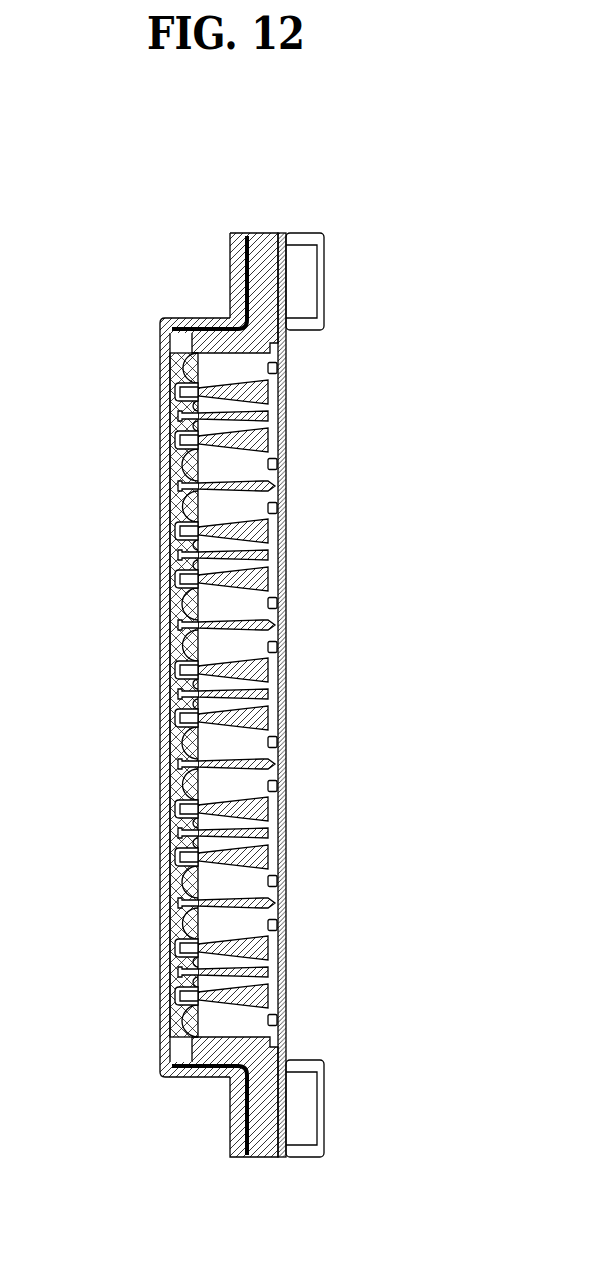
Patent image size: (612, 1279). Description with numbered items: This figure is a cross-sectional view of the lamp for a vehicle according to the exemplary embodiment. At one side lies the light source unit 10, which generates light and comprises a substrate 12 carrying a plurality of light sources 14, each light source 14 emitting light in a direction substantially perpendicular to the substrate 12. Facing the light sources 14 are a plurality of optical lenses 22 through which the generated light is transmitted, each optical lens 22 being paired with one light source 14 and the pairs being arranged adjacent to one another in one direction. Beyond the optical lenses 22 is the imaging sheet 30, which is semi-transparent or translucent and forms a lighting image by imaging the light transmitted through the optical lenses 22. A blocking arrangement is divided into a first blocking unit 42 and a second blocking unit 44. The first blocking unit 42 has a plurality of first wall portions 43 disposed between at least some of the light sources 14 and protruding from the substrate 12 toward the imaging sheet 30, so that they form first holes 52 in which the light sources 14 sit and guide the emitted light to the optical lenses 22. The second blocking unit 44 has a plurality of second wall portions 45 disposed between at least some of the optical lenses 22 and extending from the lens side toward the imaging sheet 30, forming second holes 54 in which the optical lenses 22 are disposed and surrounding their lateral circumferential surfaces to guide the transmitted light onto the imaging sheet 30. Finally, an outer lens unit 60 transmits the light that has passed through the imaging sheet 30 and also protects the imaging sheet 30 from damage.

The light source unit 10 is at (327, 695).
The substrate 12 is at (288, 445).
The light source 14 is at (288, 372).
The optical lens 22 is at (170, 747).
The imaging sheet 30 is at (191, 695).
The first blocking unit 42 is at (265, 233).
The first wall portion 43 is at (262, 722).
The second blocking unit 44 is at (197, 317).
The second wall portion 45 is at (168, 628).
The first hole 52 is at (225, 547).
The second hole 54 is at (170, 548).
The outer lens unit 60 is at (168, 580).